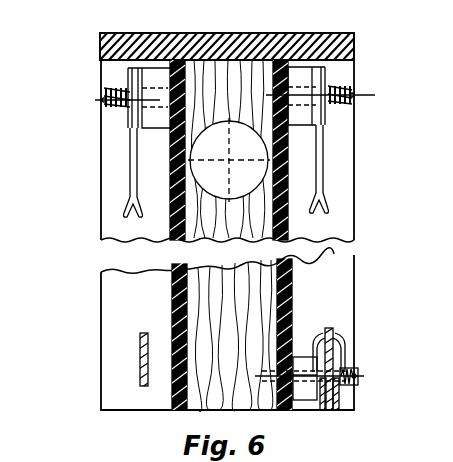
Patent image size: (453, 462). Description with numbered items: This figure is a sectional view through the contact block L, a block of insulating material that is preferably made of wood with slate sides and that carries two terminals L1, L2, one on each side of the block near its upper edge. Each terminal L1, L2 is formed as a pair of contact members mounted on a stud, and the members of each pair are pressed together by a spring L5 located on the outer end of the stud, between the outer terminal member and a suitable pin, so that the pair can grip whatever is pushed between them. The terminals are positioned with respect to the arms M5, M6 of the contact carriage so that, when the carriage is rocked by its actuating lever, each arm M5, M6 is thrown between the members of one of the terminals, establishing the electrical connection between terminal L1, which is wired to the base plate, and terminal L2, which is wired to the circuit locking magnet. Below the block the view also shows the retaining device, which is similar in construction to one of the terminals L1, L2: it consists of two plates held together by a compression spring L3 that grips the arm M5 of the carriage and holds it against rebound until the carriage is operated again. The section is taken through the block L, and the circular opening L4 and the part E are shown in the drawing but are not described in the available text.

The frame top bar E is at (252, 33).
The contact block L is at (219, 232).
The terminal L1 is at (321, 136).
The terminal L2 is at (134, 158).
The compression spring L3 is at (364, 377).
The circular aperture L4 is at (229, 160).
The spring L5 is at (108, 86).
The arm M5 is at (330, 328).
The arm M6 is at (143, 333).